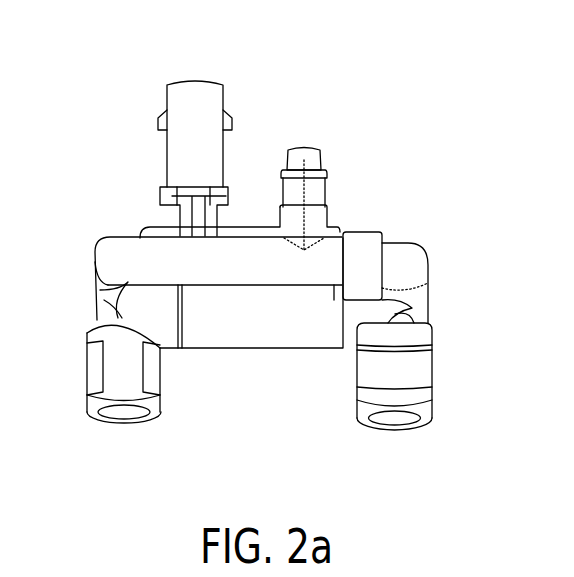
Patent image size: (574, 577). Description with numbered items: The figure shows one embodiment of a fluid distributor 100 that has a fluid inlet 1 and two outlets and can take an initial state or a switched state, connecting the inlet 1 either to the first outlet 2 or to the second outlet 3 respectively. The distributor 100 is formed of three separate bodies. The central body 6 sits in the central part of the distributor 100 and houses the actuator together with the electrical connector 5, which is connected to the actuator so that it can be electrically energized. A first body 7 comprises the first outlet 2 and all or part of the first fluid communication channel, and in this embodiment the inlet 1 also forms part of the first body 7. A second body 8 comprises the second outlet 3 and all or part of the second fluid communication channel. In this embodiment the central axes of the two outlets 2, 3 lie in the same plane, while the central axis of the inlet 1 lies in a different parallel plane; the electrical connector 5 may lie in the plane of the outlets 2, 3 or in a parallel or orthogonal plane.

The fluid distributor 100 is at (453, 108).
The fluid inlet 1 is at (304, 152).
The first outlet 2 is at (127, 413).
The second outlet 3 is at (397, 420).
The electrical connector 5 is at (190, 105).
The central body 6 is at (217, 330).
The first body 7 is at (117, 260).
The second body 8 is at (409, 265).